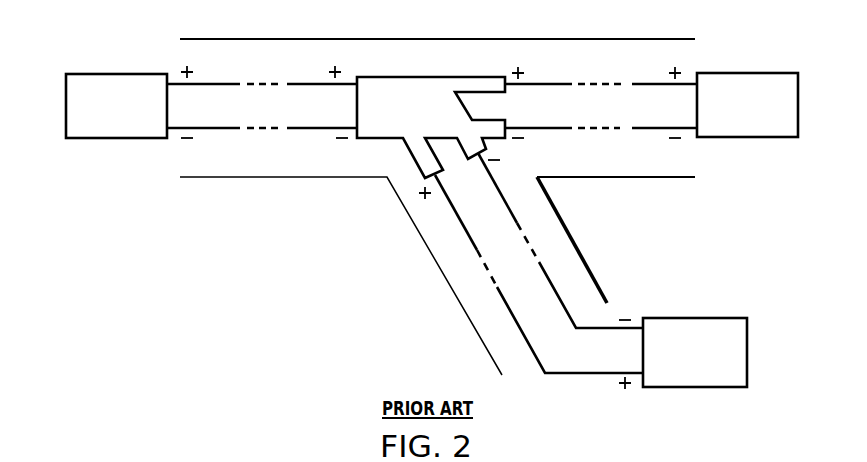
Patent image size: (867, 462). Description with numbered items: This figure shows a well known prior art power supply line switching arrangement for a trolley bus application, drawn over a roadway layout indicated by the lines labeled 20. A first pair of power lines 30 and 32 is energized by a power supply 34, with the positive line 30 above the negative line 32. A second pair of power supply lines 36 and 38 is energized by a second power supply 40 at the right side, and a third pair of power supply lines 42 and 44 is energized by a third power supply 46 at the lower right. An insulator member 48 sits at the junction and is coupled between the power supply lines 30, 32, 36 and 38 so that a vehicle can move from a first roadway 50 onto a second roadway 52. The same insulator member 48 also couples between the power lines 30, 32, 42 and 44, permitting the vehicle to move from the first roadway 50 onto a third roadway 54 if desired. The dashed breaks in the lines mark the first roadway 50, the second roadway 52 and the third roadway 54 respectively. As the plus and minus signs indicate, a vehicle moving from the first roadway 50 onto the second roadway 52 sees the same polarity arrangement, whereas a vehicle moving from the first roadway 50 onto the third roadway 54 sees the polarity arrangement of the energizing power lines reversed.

The circuit board substrate 20 is at (317, 170).
The power line 30 is at (312, 83).
The power line 32 is at (313, 130).
The power supply 34 is at (110, 73).
The power supply line 36 is at (655, 83).
The power supply line 38 is at (654, 129).
The power supply 40 is at (760, 73).
The power supply line 42 is at (575, 298).
The power supply line 44 is at (516, 318).
The power supply 46 is at (697, 318).
The insulator member 48 is at (425, 77).
The first roadway 50 is at (272, 117).
The second roadway 52 is at (609, 115).
The third roadway 54 is at (512, 265).